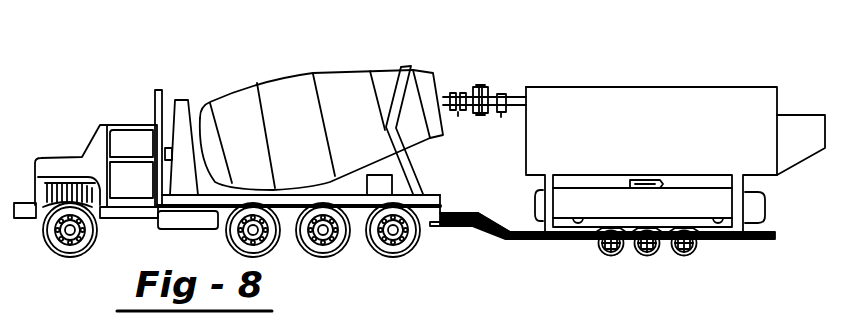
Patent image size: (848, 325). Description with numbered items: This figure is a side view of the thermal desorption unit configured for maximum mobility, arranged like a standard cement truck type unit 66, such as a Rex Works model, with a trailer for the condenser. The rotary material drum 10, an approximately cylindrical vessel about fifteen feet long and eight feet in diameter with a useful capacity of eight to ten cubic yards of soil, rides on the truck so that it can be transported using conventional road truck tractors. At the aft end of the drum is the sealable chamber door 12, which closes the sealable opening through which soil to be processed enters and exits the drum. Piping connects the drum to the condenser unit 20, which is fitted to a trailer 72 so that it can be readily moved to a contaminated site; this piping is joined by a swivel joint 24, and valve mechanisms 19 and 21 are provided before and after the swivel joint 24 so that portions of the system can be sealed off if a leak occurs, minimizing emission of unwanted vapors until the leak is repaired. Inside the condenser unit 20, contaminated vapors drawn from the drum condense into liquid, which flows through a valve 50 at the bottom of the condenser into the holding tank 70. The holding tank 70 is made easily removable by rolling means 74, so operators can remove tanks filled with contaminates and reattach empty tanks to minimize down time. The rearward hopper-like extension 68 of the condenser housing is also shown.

The cement truck type unit 66 is at (125, 103).
The rotary material drum 10 is at (295, 93).
The sealable chamber door 12 is at (442, 88).
The valve mechanism 19 is at (452, 96).
The valve mechanism 21 is at (505, 95).
The swivel joint 24 is at (478, 114).
The condenser unit 20 is at (703, 102).
The hopper extension 68 is at (795, 127).
The valve 50 is at (628, 181).
The holding tank 70 is at (760, 205).
The trailer 72 is at (527, 233).
The rolling means 74 is at (577, 226).